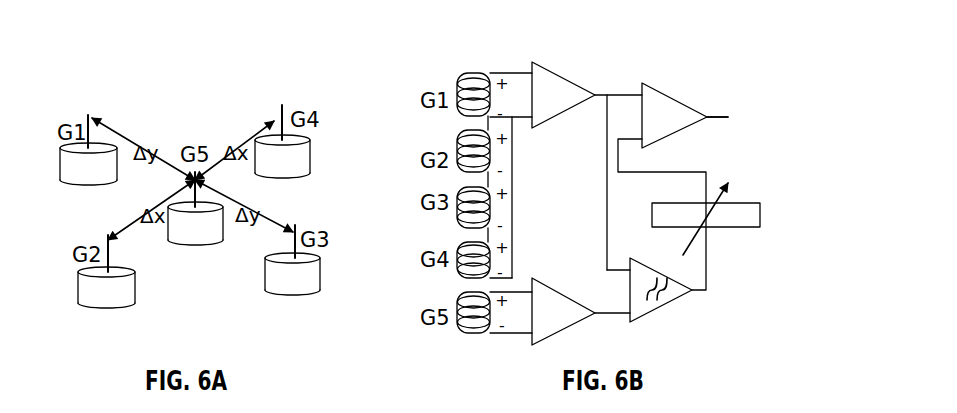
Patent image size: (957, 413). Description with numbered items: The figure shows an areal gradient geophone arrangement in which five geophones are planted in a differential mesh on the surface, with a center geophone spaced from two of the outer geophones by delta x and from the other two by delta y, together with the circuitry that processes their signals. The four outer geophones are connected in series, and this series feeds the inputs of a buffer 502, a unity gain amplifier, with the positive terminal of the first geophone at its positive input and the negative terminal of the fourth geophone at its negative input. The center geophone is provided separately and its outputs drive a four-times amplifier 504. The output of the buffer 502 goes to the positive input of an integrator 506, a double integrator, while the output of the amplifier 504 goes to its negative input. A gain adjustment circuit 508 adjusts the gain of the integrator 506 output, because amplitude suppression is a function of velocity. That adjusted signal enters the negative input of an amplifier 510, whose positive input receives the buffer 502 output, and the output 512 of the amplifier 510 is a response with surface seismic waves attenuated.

The buffer 502 is at (577, 85).
The amplifier 504 is at (580, 315).
The integrator 506 is at (681, 292).
The gain adjustment circuit 508 is at (730, 211).
The amplifier 510 is at (685, 105).
The output 512 is at (741, 99).